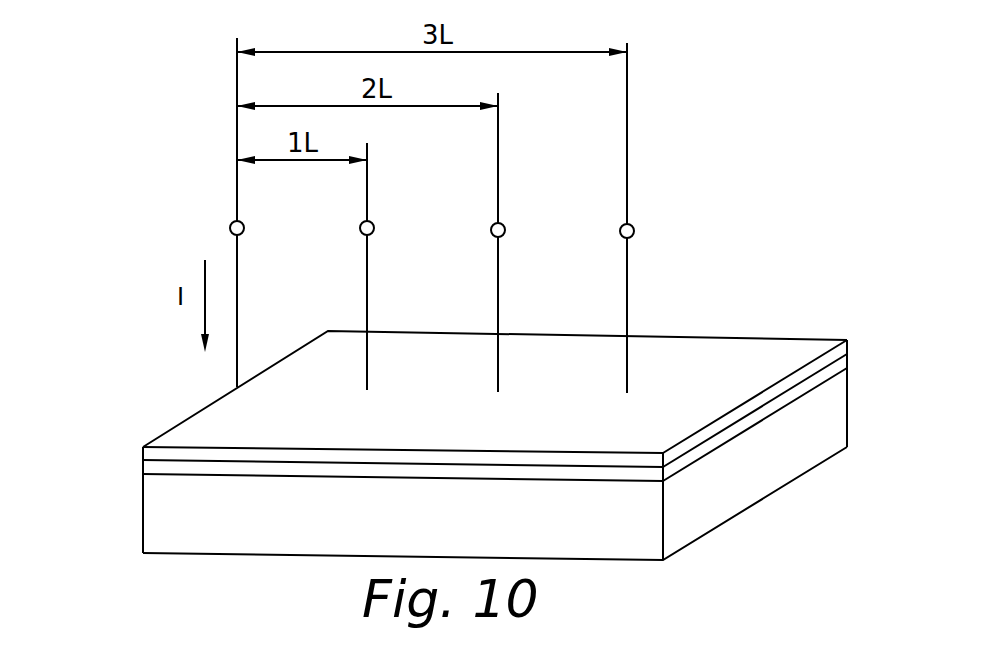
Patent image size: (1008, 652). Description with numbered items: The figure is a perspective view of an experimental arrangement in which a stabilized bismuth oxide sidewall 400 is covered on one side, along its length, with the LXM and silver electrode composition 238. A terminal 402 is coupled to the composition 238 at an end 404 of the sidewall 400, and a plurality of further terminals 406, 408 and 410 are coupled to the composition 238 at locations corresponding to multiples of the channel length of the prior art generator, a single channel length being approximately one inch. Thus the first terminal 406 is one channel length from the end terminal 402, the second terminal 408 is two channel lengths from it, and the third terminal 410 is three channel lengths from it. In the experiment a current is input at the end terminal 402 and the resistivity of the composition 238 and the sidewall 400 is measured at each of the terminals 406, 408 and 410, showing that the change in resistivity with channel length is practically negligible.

The stabilized bismuth oxide sidewall 400 is at (740, 457).
The end of the sidewall 404 is at (150, 418).
The electrode composition 238 is at (866, 362).
The terminal 402 is at (243, 224).
The first terminal 406 is at (373, 224).
The second terminal 408 is at (504, 226).
The third terminal 410 is at (633, 227).